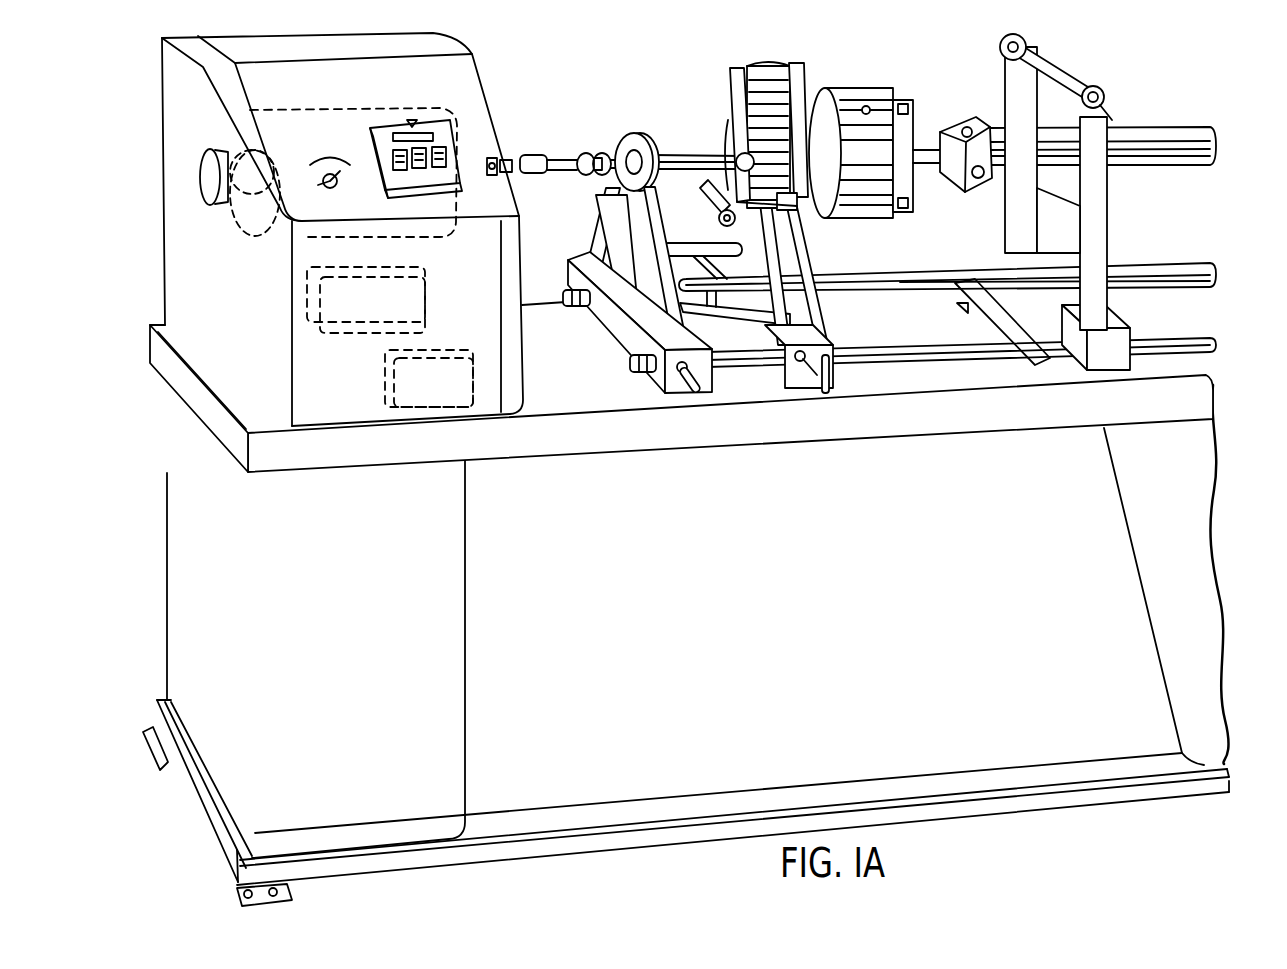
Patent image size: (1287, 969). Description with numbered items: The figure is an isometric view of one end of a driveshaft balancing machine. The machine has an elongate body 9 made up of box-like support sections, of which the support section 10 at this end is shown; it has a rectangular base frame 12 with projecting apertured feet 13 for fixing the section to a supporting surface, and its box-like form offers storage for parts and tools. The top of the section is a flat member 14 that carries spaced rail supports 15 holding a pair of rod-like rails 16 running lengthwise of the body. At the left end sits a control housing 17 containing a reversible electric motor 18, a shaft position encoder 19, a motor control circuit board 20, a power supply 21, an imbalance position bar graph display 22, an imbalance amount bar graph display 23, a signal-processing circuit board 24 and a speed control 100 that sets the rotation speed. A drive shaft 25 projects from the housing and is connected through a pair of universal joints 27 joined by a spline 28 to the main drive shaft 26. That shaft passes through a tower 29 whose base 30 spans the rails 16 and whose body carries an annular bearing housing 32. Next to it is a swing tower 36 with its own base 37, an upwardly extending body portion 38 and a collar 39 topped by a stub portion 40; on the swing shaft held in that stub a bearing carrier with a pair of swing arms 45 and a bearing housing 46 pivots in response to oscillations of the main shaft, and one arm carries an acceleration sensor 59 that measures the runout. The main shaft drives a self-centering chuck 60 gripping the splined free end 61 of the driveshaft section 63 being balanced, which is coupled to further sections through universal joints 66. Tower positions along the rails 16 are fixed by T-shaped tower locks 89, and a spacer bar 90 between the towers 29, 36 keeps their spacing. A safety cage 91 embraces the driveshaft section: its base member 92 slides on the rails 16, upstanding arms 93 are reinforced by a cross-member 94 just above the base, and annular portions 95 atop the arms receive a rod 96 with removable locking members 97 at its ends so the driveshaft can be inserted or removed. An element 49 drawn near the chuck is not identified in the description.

The elongate body 9 is at (1236, 470).
The support section 10 is at (1145, 700).
The rectangular base frame 12 is at (700, 838).
The projecting feet 13 is at (150, 720).
The flat members 14 is at (588, 395).
The rail supports 15 is at (985, 318).
The rod-like rails 16 is at (845, 294).
The control housing 17 is at (150, 168).
The reversible electric motor 18 is at (275, 238).
The shaft position encoder 19 is at (232, 140).
The motor control circuit board 20 is at (432, 302).
The power supply 21 is at (387, 376).
The imbalance position bar graph display 22 is at (422, 130).
The imbalance amount bar graph display 23 is at (393, 158).
The circuit board 24 is at (447, 140).
The drive shaft 25 is at (492, 158).
The main drive shaft 26 is at (676, 152).
The universal joints 27 is at (576, 174).
The spline 28 is at (565, 152).
The tower 29 is at (583, 225).
The base 30 is at (622, 330).
The annular bearing housing 32 is at (625, 136).
The swing tower 36 is at (762, 139).
The base 37 is at (814, 380).
The body portion 38 is at (795, 264).
The collar 39 is at (792, 204).
The stub portion 40 is at (772, 70).
The swing arms 45 is at (734, 92).
The bearing housing 46 is at (746, 130).
The spindle nose 49 is at (742, 152).
The acceleration sensor 59 is at (703, 196).
The self-centering chuck 60 is at (873, 93).
The splined free end 61 is at (944, 128).
The section 63 is at (1158, 135).
The universal joints 66 is at (980, 122).
The tower locks 89 is at (838, 378).
The spacer bars 90 is at (690, 243).
The safety cages 91 is at (1047, 225).
The base member 92 is at (1110, 368).
The upstanding arms 93 is at (1030, 92).
The cross-member 94 is at (1043, 208).
The annular portions 95 is at (1000, 44).
The rod 96 is at (1075, 76).
The locking member 97 is at (1106, 94).
The speed control 100 is at (330, 190).